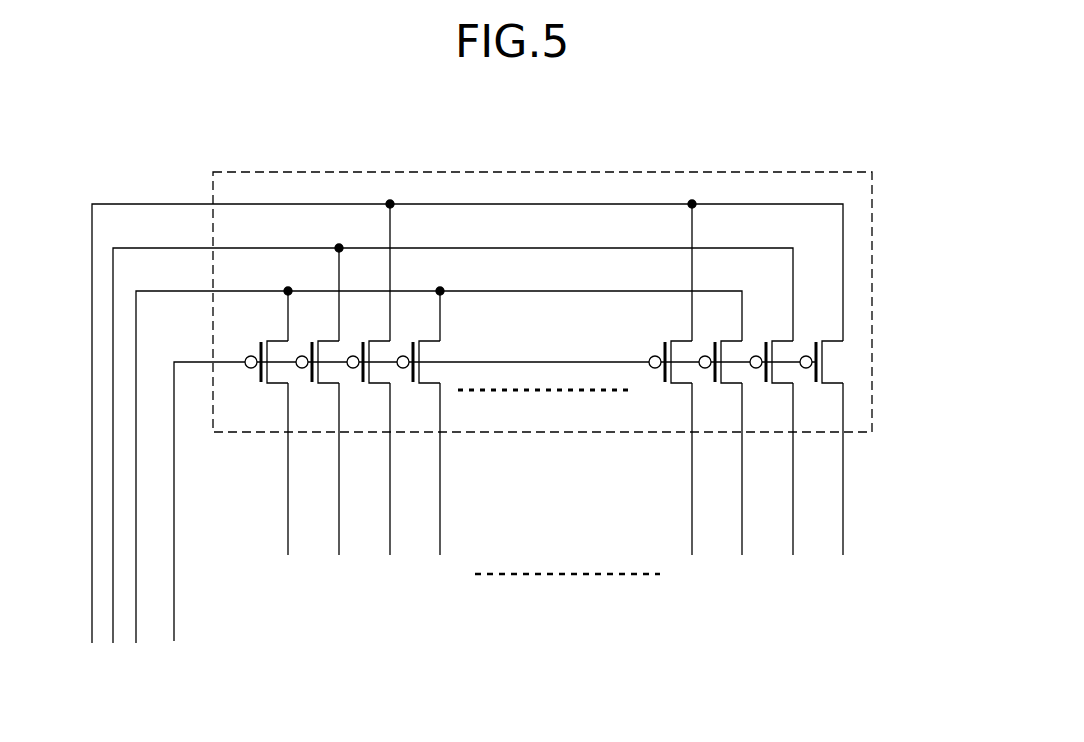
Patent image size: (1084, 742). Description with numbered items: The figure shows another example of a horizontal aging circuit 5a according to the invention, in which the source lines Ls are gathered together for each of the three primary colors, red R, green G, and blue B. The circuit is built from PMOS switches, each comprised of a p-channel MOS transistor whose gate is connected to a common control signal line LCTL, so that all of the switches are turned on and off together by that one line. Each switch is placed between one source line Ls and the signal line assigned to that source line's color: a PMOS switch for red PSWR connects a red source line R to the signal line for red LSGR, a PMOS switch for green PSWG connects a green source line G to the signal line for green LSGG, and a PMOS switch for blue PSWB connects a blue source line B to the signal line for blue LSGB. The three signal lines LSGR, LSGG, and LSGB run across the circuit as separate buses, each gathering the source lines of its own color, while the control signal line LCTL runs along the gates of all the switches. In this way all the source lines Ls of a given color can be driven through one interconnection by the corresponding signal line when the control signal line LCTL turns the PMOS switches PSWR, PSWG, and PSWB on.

The horizontal aging circuit 5a is at (389, 172).
The PMOS switch for red PSWR is at (255, 371).
The PMOS switch for green PSWG is at (328, 385).
The PMOS switch for blue PSWB is at (388, 371).
The signal line for blue LSGB is at (92, 630).
The signal line for green LSGG is at (113, 632).
The signal line for red LSGR is at (136, 638).
The control signal line LCTL is at (174, 630).
The source lines Ls is at (554, 485).
The red R is at (514, 485).
The green G is at (565, 485).
The blue B is at (616, 485).